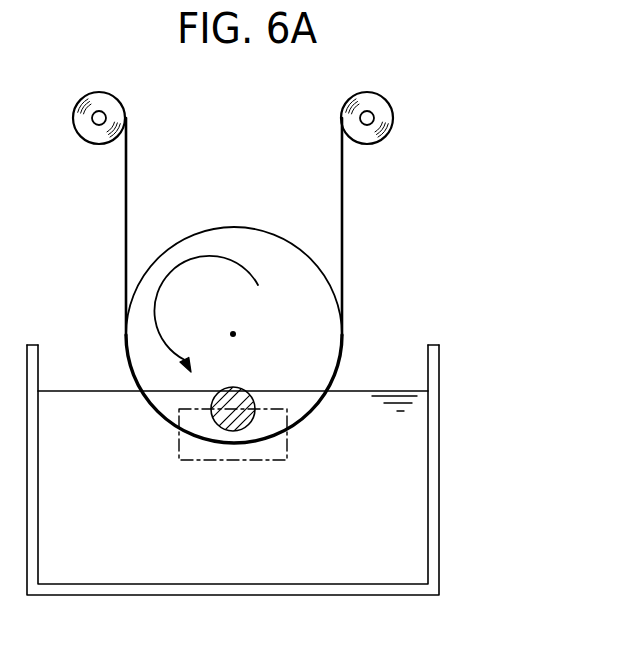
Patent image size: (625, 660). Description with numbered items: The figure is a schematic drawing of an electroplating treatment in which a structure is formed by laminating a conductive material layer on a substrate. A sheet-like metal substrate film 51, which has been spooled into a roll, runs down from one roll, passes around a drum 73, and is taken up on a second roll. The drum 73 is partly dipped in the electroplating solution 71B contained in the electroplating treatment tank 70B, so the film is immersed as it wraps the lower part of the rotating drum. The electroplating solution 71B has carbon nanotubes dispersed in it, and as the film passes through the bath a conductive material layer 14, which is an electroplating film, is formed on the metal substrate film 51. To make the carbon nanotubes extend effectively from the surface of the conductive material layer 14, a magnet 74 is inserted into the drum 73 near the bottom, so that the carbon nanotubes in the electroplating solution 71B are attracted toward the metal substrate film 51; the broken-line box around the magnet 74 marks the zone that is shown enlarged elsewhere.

The metal substrate film 51 is at (126, 193).
The conductive material layer 14 is at (342, 193).
The drum 73 is at (252, 242).
The magnet 74 is at (250, 397).
The electroplating treatment tank 70B is at (433, 374).
The electroplating solution 71B is at (403, 480).